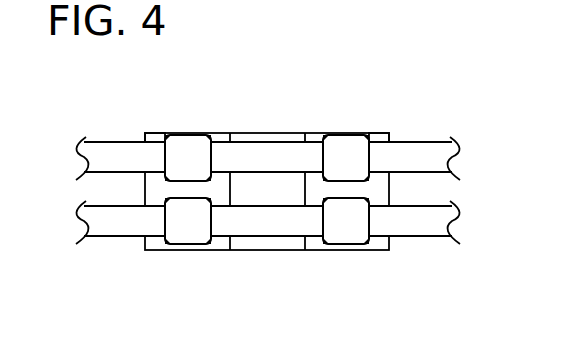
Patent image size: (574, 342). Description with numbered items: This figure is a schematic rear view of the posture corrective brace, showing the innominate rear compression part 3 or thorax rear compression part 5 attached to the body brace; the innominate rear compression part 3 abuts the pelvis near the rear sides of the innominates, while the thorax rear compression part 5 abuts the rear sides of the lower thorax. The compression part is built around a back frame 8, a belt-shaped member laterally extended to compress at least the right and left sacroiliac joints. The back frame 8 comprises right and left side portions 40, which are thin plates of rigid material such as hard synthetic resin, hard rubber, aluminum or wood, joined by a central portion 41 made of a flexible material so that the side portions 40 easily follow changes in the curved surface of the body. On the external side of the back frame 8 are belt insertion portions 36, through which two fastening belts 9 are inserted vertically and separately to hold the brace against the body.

The innominate rear compression part 3 is at (228, 119).
The thorax rear compression part 5 is at (258, 191).
The back frame 8 is at (254, 250).
The fastening belt 9 is at (112, 150).
The belt insertion portion 36 is at (187, 150).
The side portion 40 is at (148, 134).
The central portion 41 is at (262, 132).